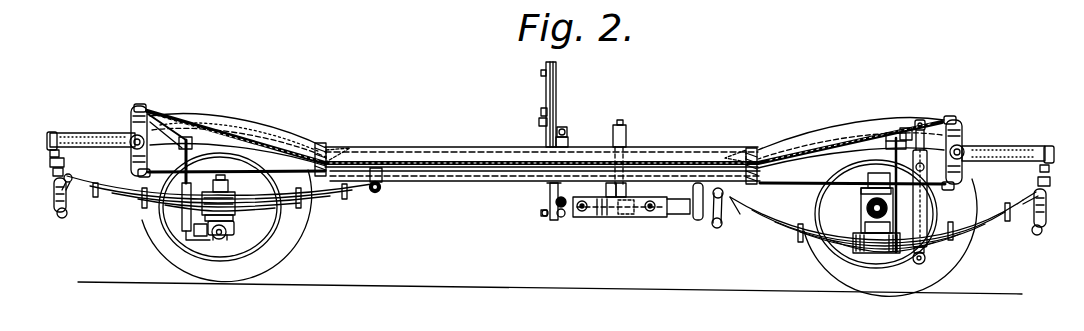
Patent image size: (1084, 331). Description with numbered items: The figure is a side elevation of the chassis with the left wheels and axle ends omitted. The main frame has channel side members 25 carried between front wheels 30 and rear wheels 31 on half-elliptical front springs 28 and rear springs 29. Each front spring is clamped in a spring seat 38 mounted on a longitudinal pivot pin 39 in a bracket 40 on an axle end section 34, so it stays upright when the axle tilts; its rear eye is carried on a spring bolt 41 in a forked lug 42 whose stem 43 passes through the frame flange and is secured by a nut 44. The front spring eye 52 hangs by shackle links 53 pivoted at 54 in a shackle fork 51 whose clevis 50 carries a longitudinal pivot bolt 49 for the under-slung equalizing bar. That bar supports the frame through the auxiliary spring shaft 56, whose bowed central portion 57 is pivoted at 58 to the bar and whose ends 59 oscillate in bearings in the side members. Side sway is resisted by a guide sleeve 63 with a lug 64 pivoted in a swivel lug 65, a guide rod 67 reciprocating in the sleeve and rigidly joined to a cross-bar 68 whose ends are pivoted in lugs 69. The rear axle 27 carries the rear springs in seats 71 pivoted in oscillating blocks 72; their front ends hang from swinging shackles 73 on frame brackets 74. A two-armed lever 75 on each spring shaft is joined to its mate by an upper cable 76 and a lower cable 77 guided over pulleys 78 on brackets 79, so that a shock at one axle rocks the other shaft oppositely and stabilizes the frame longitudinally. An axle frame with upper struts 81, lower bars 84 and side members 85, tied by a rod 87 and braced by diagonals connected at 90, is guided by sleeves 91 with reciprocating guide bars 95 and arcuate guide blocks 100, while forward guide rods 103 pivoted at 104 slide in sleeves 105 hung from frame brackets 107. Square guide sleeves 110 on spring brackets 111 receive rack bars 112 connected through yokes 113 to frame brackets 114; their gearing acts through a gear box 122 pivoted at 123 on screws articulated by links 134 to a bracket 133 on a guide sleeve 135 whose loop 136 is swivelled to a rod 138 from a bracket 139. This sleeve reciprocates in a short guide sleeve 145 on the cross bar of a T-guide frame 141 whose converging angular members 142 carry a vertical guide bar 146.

The side members 25 is at (471, 149).
The rear axle 27 is at (867, 208).
The front springs 28 is at (323, 201).
The rear springs 29 is at (988, 229).
The front wheels 30 is at (274, 252).
The rear wheels 31 is at (902, 288).
The end sections 34 is at (218, 240).
The spring seats 38 is at (236, 195).
The longitudinal pivot pins 39 is at (234, 230).
The brackets 40 is at (224, 238).
The spring bolts 41 is at (377, 194).
The forked lugs 42 is at (382, 181).
The stems 43 is at (376, 168).
The nuts 44 is at (386, 174).
The pivot pins 49 is at (50, 163).
The clevises 50 is at (53, 172).
The shackle forks 51 is at (55, 186).
The front spring eye 52 is at (70, 178).
The shackle links 53 is at (72, 192).
The pivotal connections 54 is at (57, 213).
The auxiliary spring shaft 56 is at (98, 127).
The central portion 57 is at (50, 137).
The pivotal connection 58 is at (50, 153).
The ends of the spring shaft 59 is at (130, 147).
The guide sleeve 63 is at (181, 215).
The lug 64 is at (192, 234).
The lug 65 is at (201, 237).
The guide rod 67 is at (190, 166).
The cross-bar 68 is at (191, 166).
The lugs 69 is at (188, 156).
The spring seats 71 is at (862, 250).
The blocks 72 is at (865, 226).
The swinging shackles 73 is at (719, 228).
The brackets 74 is at (697, 221).
The two-armed lever 75 is at (133, 118).
The upper link or cable 76 is at (283, 143).
The lower link or cable 77 is at (443, 180).
The pulleys 78 is at (345, 153).
The supports or brackets 79 is at (328, 143).
The upper struts 81 is at (861, 191).
The lower longitudinal bars 84 is at (750, 226).
The side member 85 is at (650, 221).
The rod 87 is at (584, 212).
The connection 90 is at (652, 212).
The sleeves 91 is at (893, 160).
The guide bar 95 is at (892, 135).
The guide block 100 is at (878, 168).
The guide rods 103 is at (609, 184).
The longitudinal axes 104 is at (626, 185).
The guide sleeve 105 is at (633, 143).
The frame bracket 107 is at (628, 132).
The square guide sleeves 110 is at (928, 207).
The brackets 111 is at (925, 259).
The rack bar 112 is at (924, 167).
The yoke 113 is at (926, 124).
The bracket 114 is at (904, 128).
The gear box 122 is at (549, 186).
The longitudinal axis 123 is at (556, 196).
The bracket 133 is at (564, 130).
The link 134 is at (569, 139).
The guide sleeve 135 is at (543, 117).
The yoke or loop 136 is at (545, 211).
The rod 138 is at (601, 219).
The bracket 139 is at (624, 218).
The frame 141 is at (557, 82).
The angular members 142 is at (557, 93).
The short guide sleeve 145 is at (540, 122).
The vertical guide bar 146 is at (545, 73).